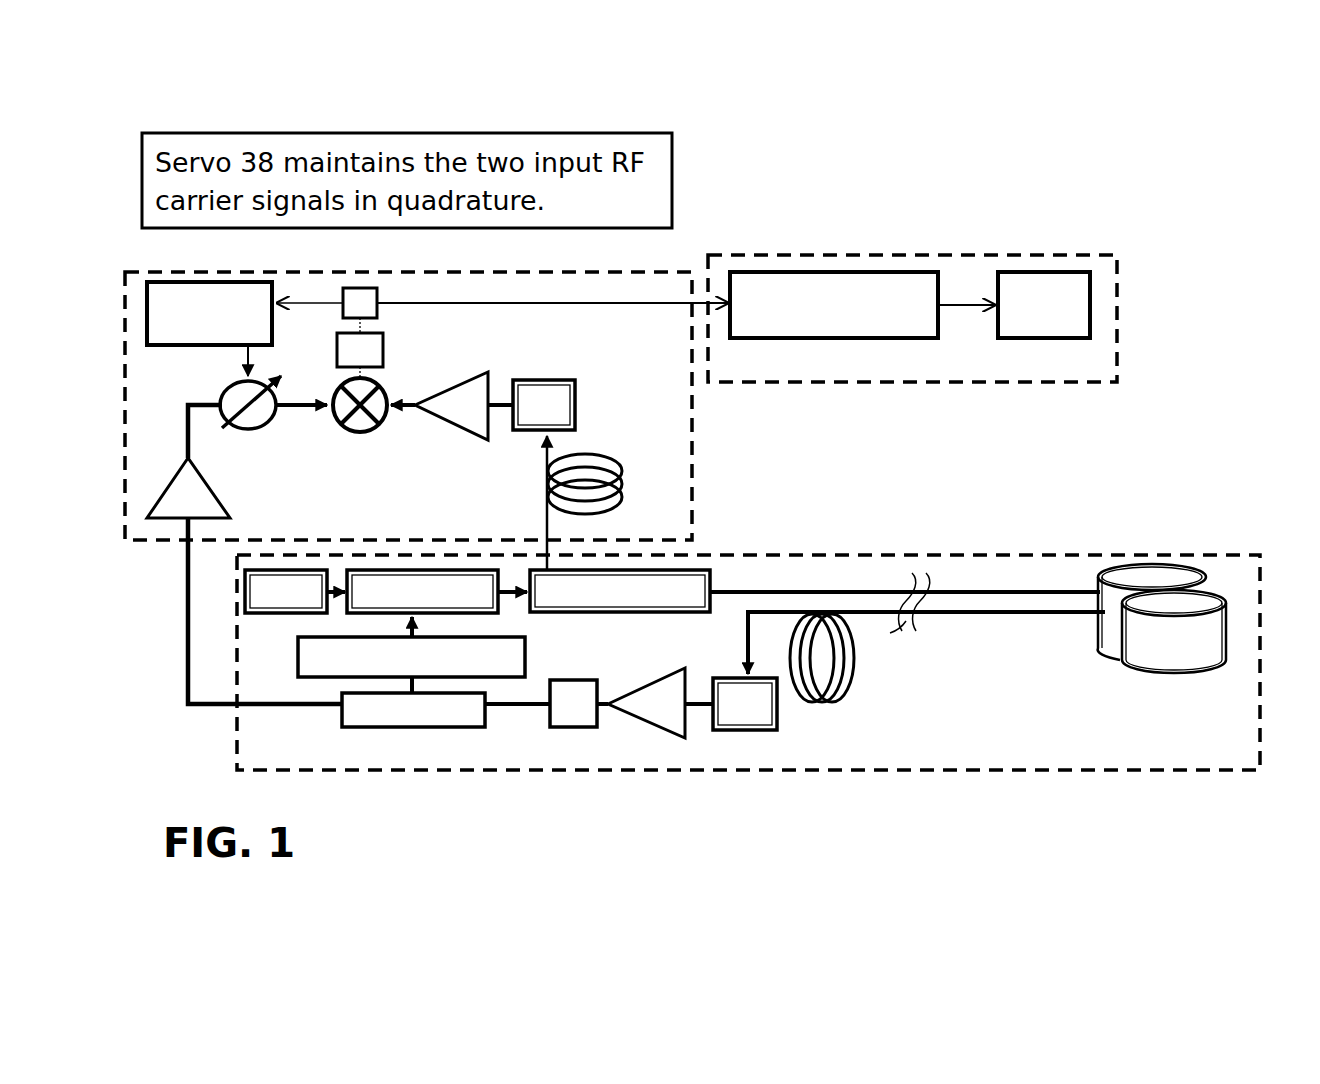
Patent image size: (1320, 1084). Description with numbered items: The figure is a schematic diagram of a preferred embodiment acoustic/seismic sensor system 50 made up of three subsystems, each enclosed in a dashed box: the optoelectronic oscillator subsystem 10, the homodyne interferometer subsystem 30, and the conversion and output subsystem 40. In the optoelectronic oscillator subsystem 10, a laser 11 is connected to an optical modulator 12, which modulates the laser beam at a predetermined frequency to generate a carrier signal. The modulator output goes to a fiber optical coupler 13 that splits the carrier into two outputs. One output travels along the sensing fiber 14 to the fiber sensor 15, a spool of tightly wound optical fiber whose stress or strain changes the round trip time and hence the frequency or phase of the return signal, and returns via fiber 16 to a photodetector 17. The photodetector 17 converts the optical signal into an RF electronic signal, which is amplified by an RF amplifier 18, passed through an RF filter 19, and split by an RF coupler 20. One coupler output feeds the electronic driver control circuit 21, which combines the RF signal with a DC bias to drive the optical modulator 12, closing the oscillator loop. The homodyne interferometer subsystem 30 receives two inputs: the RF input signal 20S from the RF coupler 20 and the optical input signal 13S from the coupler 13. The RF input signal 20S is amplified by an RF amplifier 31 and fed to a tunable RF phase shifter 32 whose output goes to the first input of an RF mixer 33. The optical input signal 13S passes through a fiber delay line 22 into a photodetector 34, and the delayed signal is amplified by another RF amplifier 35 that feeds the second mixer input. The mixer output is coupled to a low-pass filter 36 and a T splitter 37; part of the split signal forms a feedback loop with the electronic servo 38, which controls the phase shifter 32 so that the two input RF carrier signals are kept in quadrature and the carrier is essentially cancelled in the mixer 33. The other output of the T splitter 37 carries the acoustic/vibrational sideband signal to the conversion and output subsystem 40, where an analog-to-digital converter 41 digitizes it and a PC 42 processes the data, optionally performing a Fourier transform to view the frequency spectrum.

The optoelectronic oscillator subsystem 10 is at (612, 770).
The laser 11 is at (292, 614).
The optical modulator 12 is at (437, 591).
The fiber optical coupler 13 is at (620, 591).
The optical input signal 13S is at (549, 548).
The sensing fiber 14 is at (988, 598).
The fiber sensor 15 is at (1162, 648).
The return fiber 16 is at (962, 620).
The photodetector 17 is at (777, 712).
The RF amplifier 18 is at (637, 700).
The RF filter 19 is at (571, 684).
The RF coupler 20 is at (418, 728).
The RF input signal 20S is at (186, 585).
The electronic driver control circuit 21 is at (516, 663).
The fiber delay line 22 is at (603, 484).
The homodyne interferometer subsystem 30 is at (694, 456).
The RF amplifier 31 is at (222, 503).
The tunable RF phase shifter 32 is at (223, 410).
The RF mixer 33 is at (348, 430).
The photodetector 34 is at (575, 405).
The RF amplifier 35 is at (456, 428).
The low-pass filter 36 is at (383, 350).
The T splitter 37 is at (352, 288).
The electronic servo 38 is at (175, 292).
The conversion and output subsystem 40 is at (950, 257).
The analog-to-digital converter 41 is at (748, 272).
The PC 42 is at (1066, 268).
The acoustic/seismic sensor system 50 is at (1172, 233).